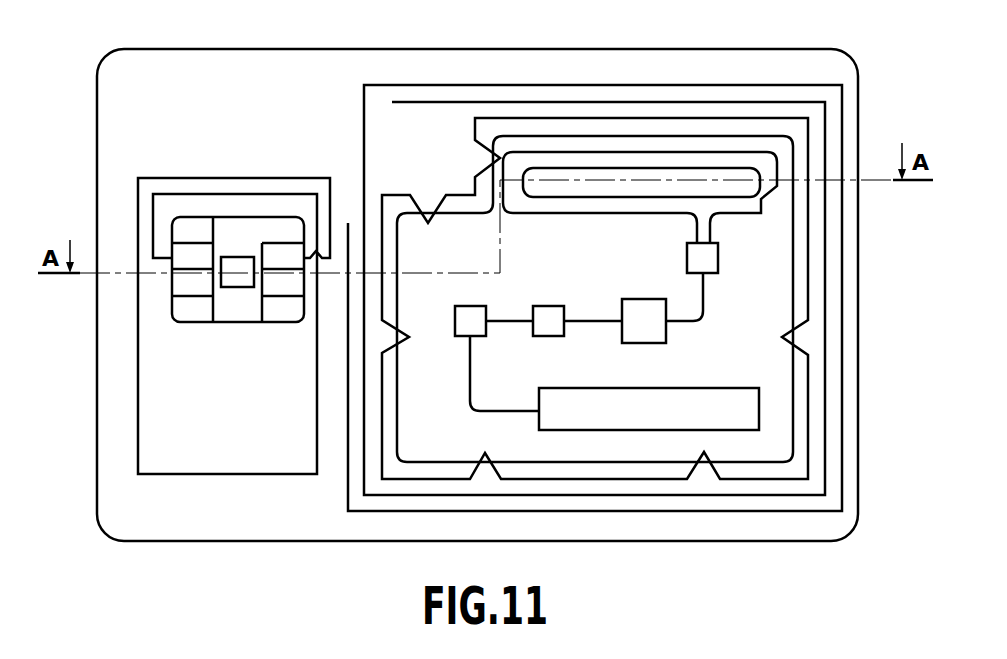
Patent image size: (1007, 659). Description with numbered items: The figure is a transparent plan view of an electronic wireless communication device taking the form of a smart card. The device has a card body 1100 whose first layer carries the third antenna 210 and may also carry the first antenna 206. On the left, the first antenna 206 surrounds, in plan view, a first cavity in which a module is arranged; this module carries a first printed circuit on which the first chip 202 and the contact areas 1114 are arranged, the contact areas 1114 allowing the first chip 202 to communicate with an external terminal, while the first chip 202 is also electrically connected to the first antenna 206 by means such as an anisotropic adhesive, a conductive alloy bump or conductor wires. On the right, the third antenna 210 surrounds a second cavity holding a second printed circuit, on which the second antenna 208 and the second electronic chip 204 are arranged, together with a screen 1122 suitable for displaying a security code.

The card body 1100 is at (194, 49).
The first antenna 206 is at (139, 442).
The contact areas 1114 is at (262, 305).
The first chip 202 is at (237, 279).
The third antenna 210 is at (470, 85).
The second antenna 208 is at (766, 150).
The second electronic chip 204 is at (688, 260).
The screen 1122 is at (672, 423).